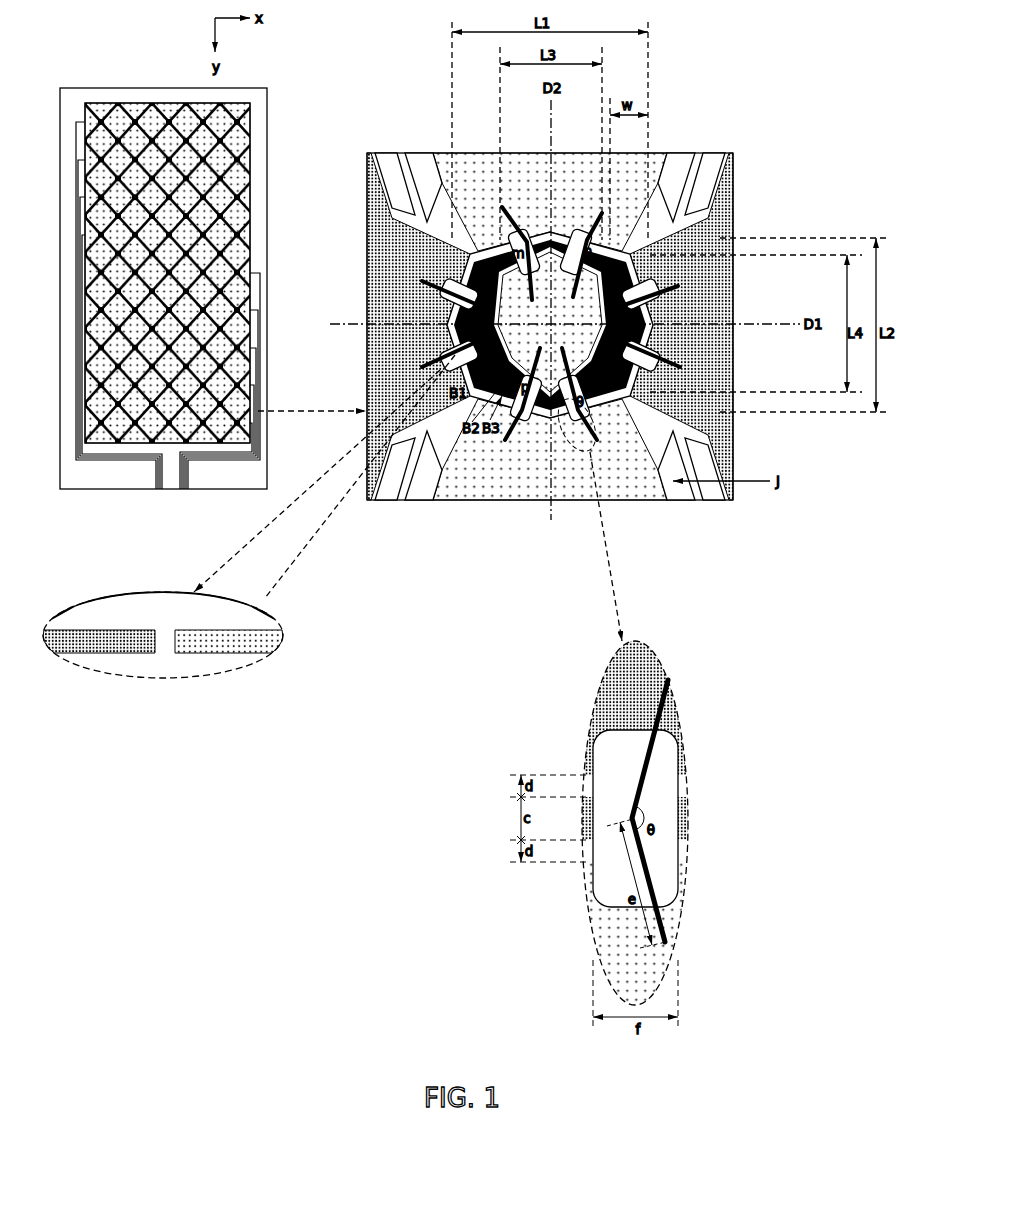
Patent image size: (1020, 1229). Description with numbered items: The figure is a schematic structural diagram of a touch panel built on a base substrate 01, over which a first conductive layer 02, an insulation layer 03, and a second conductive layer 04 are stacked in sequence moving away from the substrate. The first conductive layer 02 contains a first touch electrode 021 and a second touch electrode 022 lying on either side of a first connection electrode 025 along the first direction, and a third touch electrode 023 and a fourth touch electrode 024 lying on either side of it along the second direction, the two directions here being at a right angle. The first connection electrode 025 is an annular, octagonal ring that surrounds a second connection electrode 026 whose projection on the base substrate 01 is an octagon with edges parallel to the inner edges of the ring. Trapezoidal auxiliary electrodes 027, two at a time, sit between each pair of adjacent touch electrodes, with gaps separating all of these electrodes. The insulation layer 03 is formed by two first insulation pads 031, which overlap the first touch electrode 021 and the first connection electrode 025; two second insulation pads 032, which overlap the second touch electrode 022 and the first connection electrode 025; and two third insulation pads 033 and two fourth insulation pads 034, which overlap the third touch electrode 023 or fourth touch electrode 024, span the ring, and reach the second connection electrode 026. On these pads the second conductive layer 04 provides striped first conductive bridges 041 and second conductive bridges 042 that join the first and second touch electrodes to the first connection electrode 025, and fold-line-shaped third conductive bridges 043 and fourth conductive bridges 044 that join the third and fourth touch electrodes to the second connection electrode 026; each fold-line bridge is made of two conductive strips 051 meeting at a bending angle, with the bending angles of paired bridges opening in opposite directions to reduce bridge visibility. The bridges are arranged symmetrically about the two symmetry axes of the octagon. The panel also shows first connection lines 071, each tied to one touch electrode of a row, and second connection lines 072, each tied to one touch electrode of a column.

The base substrate 01 is at (62, 190).
The first conductive layer 02 is at (384, 93).
The first touch electrode 021 is at (366, 334).
The second touch electrode 022 is at (736, 198).
The third touch electrode 023 is at (440, 151).
The fourth touch electrode 024 is at (457, 502).
The first connection electrode 025 is at (615, 374).
The second connection electrode 026 is at (593, 312).
The auxiliary electrode 027 is at (384, 151).
The insulation layer 03 is at (523, 113).
The first insulation pad 031 is at (441, 300).
The second insulation pad 032 is at (661, 283).
The third insulation pad 033 is at (523, 230).
The fourth insulation pad 034 is at (532, 418).
The second conductive layer 04 is at (478, 121).
The first conductive bridge 041 is at (426, 281).
The second conductive bridge 042 is at (675, 286).
The third conductive bridge 043 is at (502, 203).
The fourth conductive bridge 044 is at (505, 443).
The conductive strip 051 is at (668, 919).
The first connection line 071 is at (78, 241).
The second connection line 072 is at (117, 450).